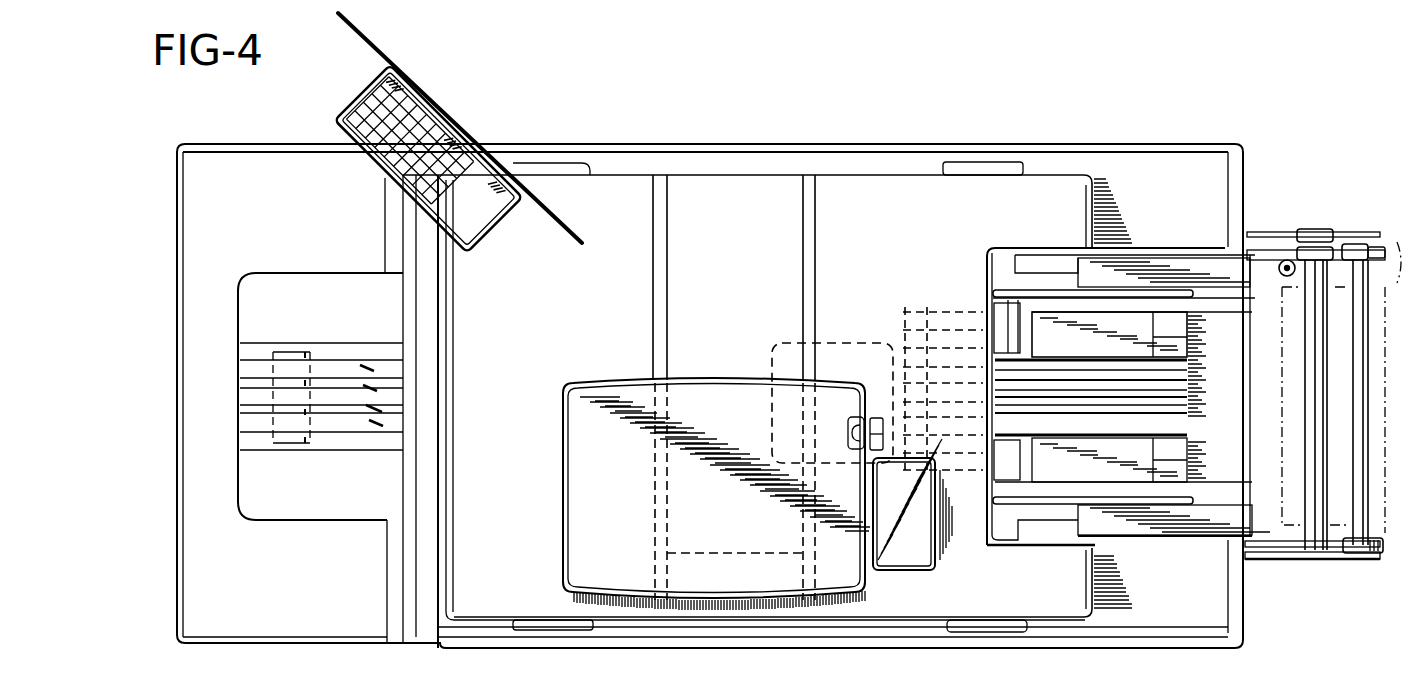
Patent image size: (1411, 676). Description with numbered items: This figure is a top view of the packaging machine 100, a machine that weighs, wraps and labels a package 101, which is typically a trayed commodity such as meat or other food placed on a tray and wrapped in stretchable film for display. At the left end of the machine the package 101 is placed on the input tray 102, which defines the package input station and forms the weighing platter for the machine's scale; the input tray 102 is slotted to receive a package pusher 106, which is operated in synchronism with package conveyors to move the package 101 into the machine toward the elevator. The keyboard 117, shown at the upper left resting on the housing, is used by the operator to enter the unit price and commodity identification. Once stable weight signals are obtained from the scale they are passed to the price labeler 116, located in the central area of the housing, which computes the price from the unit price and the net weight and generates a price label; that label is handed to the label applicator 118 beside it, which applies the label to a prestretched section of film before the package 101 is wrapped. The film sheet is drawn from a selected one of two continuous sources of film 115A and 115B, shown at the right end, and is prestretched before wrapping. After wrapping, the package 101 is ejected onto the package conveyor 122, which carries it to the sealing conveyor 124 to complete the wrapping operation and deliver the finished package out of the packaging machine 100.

The packaging machine 100 is at (717, 142).
The package 101 is at (887, 342).
The input tray 102 is at (303, 508).
The package pusher 106 is at (308, 413).
The continuous source of film 115A is at (1397, 240).
The continuous source of film 115B is at (1282, 500).
The price labeler 116 is at (575, 505).
The keyboard 117 is at (362, 101).
The label applicator 118 is at (920, 540).
The package conveyor 122 is at (941, 303).
The sealing conveyor 124 is at (1118, 330).